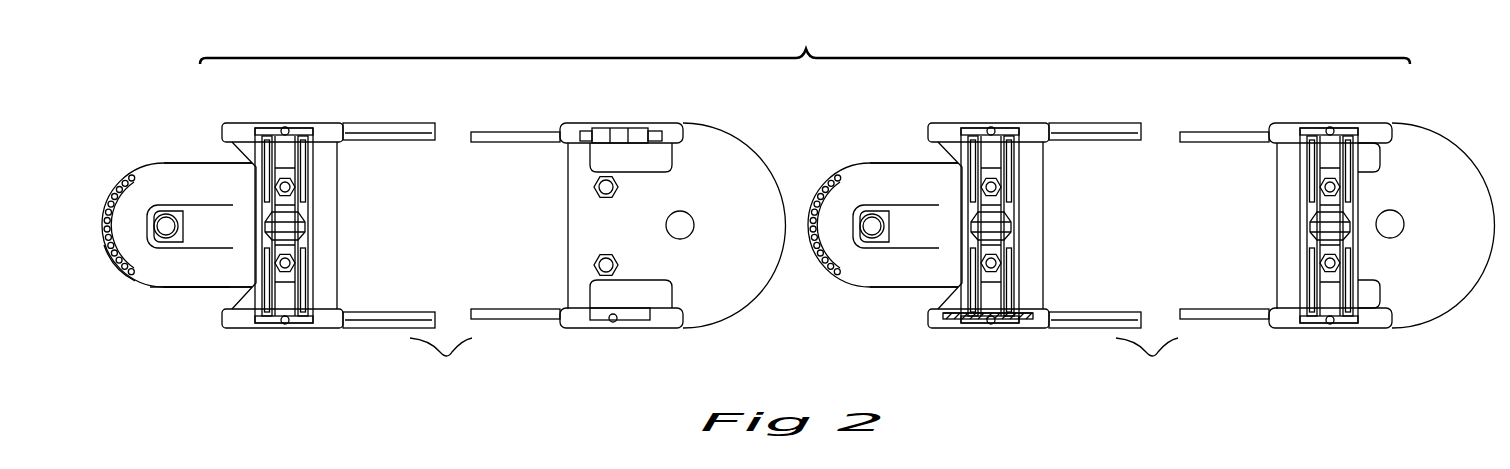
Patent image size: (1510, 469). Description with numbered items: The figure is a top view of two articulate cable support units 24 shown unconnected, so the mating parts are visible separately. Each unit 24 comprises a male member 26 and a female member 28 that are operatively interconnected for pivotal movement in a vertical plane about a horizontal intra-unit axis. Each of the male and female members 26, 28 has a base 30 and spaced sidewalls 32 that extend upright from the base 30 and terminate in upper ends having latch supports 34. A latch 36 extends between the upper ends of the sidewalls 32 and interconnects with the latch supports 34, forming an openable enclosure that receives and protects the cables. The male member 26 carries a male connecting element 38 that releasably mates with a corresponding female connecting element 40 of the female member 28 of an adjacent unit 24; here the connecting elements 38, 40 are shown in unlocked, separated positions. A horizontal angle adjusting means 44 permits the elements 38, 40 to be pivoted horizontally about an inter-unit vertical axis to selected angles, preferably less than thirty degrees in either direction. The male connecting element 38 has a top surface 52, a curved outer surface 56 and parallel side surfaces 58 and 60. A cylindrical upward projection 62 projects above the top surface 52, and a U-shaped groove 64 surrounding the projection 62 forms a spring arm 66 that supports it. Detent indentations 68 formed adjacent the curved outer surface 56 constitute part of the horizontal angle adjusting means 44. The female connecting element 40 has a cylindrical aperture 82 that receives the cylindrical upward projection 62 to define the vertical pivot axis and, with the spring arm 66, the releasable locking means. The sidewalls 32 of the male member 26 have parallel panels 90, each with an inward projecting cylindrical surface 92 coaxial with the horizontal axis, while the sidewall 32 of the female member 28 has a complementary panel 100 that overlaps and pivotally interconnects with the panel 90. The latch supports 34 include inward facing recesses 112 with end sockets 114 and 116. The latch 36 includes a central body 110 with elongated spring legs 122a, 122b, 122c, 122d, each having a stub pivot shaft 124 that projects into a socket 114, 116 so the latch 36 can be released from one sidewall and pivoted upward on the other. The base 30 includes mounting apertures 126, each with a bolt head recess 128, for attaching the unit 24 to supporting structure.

The articulate cable support unit 24 is at (794, 366).
The male member 26 is at (323, 122).
The female member 28 is at (740, 163).
The base 30 is at (328, 267).
The sidewall 32 is at (342, 128).
The latch support 34 is at (273, 326).
The latch 36 is at (316, 198).
The male connecting element 38 is at (556, 266).
The female connecting element 40 is at (1105, 220).
The horizontal angle adjusting means 44 is at (115, 180).
The top surface 52 is at (162, 281).
The curved outer surface 56 is at (128, 281).
The side surface 58 is at (178, 162).
The side surface 60 is at (192, 288).
The cylindrical upward projection 62 is at (160, 218).
The U-shaped groove 64 is at (205, 206).
The spring arm 66 is at (543, 226).
The detent indentations 68 is at (137, 172).
The cylindrical aperture 82 is at (690, 232).
The panel 90 is at (395, 123).
The inward projecting cylindrical surface 92 is at (395, 142).
The panel 100 is at (503, 143).
The central body 110 is at (306, 230).
The recess 112 is at (285, 127).
The end socket 114 is at (955, 327).
The end socket 116 is at (1027, 330).
The elongated spring leg 122a is at (266, 130).
The elongated spring leg 122b is at (310, 153).
The elongated spring leg 122c is at (257, 314).
The elongated spring leg 122d is at (320, 300).
The stub pivot shaft 124 is at (582, 136).
The mounting aperture 126 is at (618, 190).
The bolt head recess 128 is at (594, 195).